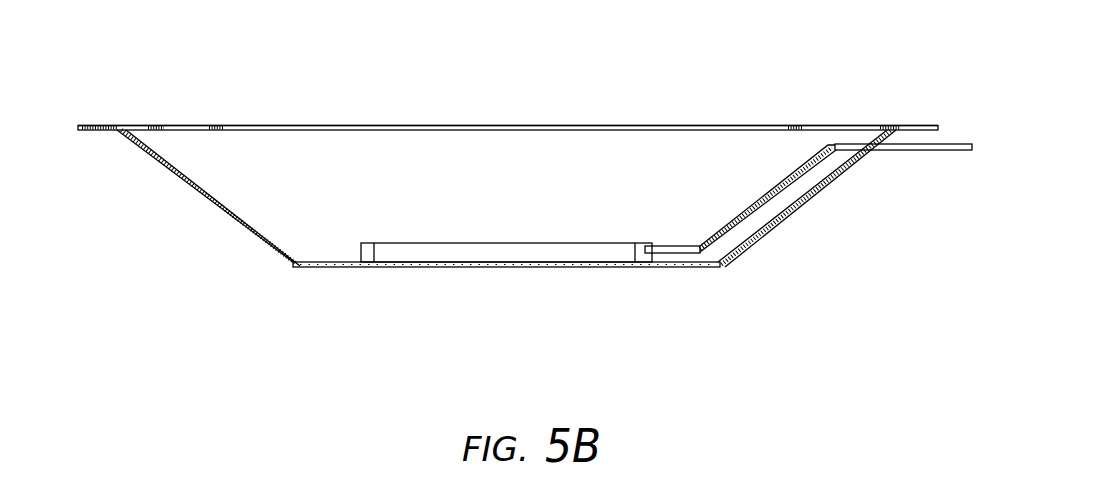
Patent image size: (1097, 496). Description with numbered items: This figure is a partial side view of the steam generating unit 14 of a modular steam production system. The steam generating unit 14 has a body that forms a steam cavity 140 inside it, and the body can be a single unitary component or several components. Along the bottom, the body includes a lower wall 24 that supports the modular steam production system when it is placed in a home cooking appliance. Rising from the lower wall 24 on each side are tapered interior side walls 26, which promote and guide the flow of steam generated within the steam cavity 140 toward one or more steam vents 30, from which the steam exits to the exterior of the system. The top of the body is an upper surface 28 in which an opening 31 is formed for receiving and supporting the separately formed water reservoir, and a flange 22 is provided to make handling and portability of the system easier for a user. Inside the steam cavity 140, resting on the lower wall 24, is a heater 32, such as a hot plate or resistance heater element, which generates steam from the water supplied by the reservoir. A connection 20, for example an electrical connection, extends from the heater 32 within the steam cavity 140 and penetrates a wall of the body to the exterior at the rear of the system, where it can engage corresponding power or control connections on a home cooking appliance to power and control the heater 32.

The flange 22 is at (92, 125).
The steam vent 30 is at (160, 124).
The upper surface 28 is at (217, 124).
The opening 31 is at (467, 125).
The steam cavity 140 is at (668, 190).
The heater 32 is at (463, 243).
The connection 20 is at (933, 153).
The interior side wall 26 is at (207, 203).
The lower wall 24 is at (343, 268).
The steam generating unit 14 is at (902, 359).